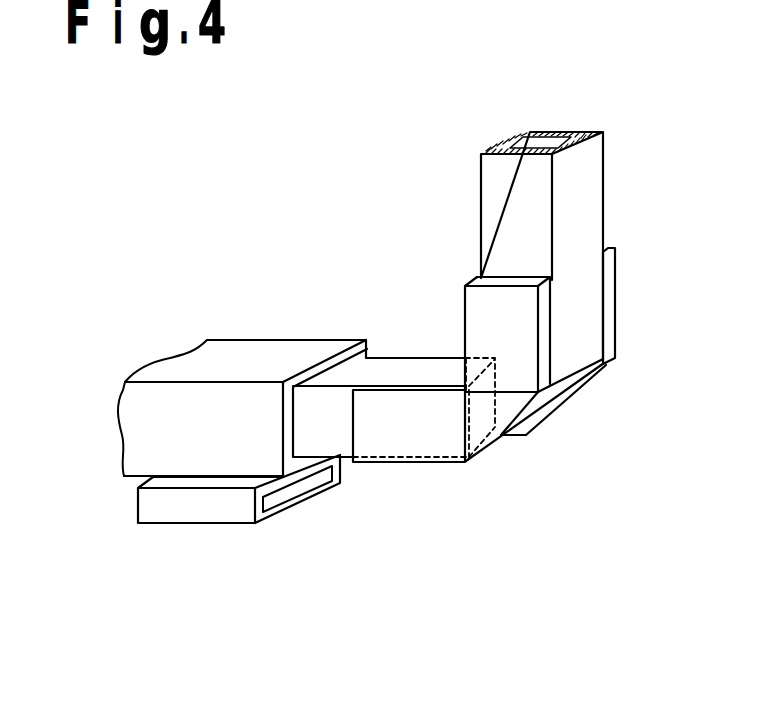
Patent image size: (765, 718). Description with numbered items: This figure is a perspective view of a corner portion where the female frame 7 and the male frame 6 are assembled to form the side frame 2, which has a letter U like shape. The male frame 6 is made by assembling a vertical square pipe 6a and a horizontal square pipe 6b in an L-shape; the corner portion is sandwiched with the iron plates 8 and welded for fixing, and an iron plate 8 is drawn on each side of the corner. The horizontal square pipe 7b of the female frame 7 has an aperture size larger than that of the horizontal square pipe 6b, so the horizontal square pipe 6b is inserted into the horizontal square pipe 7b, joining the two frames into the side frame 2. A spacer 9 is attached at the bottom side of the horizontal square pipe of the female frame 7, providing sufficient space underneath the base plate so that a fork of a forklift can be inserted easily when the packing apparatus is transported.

The side frame 2 is at (307, 223).
The male frame 6 is at (607, 190).
The vertical square pipe 6a is at (488, 188).
The horizontal square pipe 6b is at (415, 368).
The female frame 7 is at (178, 342).
The horizontal square pipe 7b is at (258, 352).
The iron plate 8 is at (477, 307).
The spacer 9 is at (225, 515).